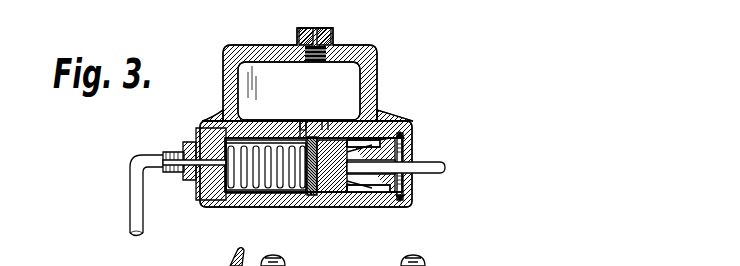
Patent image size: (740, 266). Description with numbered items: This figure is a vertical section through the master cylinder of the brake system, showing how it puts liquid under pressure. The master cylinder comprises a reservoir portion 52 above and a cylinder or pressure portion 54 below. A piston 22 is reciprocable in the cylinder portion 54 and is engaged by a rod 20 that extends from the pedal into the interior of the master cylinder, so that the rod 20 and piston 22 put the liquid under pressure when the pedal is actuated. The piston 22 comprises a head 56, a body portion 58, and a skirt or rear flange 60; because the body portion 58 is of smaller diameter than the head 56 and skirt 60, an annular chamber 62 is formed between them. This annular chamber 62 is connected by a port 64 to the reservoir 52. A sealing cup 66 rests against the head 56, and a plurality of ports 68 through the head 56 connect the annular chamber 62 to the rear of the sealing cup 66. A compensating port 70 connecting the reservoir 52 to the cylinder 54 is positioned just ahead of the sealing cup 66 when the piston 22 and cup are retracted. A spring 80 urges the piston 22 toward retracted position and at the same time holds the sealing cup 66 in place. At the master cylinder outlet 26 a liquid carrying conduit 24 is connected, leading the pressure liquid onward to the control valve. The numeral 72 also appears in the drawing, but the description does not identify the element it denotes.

The rod 20 is at (434, 175).
The piston 22 is at (344, 196).
The liquid carrying conduit 24 is at (133, 205).
The master cylinder outlet 26 is at (173, 151).
The reservoir portion 52 is at (348, 90).
The cylinder portion 54 is at (281, 191).
The head 56 is at (338, 194).
The body portion 58 is at (379, 122).
The skirt 60 is at (398, 200).
The annular chamber 62 is at (361, 198).
The port 64 is at (322, 126).
The sealing cup 66 is at (303, 136).
The ports 68 is at (313, 195).
The compensating port 70 is at (297, 130).
The screw 72 is at (538, 265).
The spring 80 is at (253, 193).